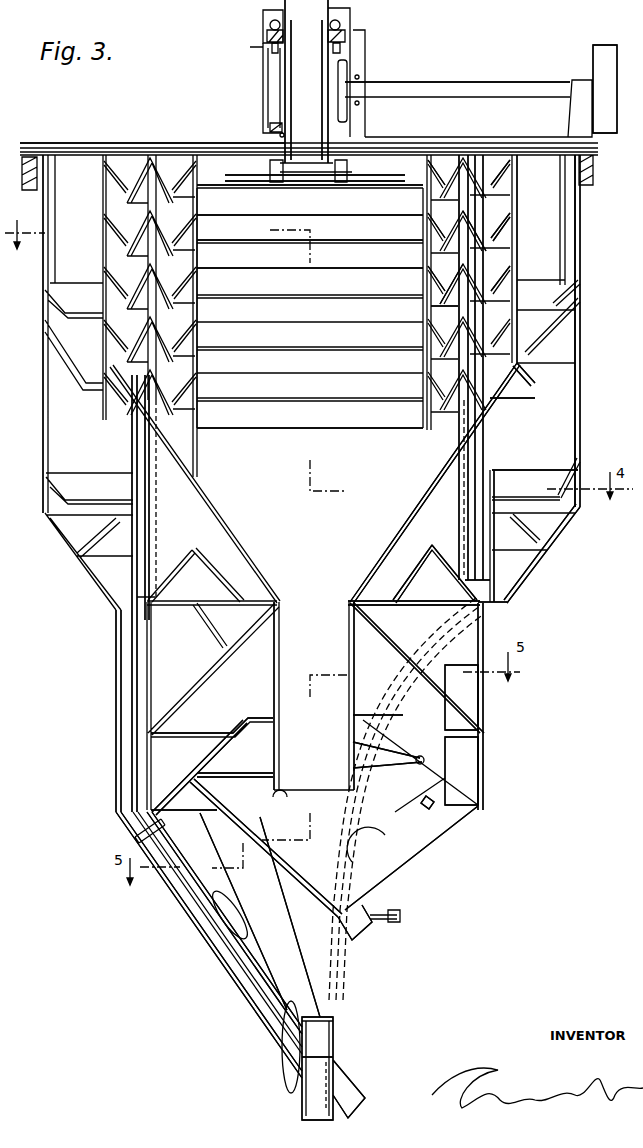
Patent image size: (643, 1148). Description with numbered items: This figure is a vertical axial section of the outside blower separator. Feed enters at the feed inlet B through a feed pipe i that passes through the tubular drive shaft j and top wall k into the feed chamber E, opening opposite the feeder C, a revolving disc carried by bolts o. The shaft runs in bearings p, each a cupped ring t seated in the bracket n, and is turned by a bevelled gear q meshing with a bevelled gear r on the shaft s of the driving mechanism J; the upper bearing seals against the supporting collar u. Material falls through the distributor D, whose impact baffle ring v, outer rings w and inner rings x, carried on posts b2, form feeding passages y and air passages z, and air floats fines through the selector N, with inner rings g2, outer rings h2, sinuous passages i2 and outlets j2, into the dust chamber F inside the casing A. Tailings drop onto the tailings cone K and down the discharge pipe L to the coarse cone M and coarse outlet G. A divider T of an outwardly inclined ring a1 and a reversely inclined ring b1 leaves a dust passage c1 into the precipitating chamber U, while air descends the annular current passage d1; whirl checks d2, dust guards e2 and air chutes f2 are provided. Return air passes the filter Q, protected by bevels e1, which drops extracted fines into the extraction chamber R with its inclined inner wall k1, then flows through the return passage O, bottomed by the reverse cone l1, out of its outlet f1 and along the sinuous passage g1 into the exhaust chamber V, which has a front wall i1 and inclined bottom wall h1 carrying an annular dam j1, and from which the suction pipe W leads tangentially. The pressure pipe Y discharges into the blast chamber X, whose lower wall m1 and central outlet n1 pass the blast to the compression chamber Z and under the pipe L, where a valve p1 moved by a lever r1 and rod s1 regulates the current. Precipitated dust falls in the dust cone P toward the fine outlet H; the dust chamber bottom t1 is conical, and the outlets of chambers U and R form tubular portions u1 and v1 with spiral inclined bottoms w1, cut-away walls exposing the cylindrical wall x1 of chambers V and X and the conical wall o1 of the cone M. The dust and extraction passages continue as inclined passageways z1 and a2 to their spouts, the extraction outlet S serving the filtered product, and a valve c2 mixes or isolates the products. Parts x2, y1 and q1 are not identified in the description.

The supporting collar u is at (262, 14).
The bearings p is at (269, 130).
The cupped ring t is at (346, 33).
The bracket n is at (366, 58).
The bevelled gear r is at (348, 81).
The driving mechanism J is at (457, 69).
The shaft s is at (512, 90).
The feed inlet B is at (306, 81).
The feed pipe i is at (306, 90).
The tubular drive shaft j is at (280, 92).
The bevelled gear q is at (278, 128).
The top wall k is at (220, 153).
The feeder C is at (358, 176).
The impact baffle ring v is at (430, 178).
The bolts o is at (361, 188).
The distributor D is at (400, 228).
The outer converging rings w is at (460, 220).
The inner retarding rings x is at (426, 258).
The feeding passages y is at (428, 291).
The air passages z is at (451, 284).
The selector N is at (501, 191).
The inner rings g2 is at (496, 223).
The outer rings h2 is at (517, 222).
The dust chamber F is at (546, 331).
The sinuous current passages i2 is at (505, 258).
The outlets j2 is at (494, 275).
The whirl checks d2 is at (581, 216).
The dust guards e2 is at (580, 296).
The annular current passage d1 is at (560, 340).
The main frame or casing A is at (321, 334).
The reversely inclined ring b1 is at (536, 380).
The dust passage c1 is at (521, 396).
The outwardly inclined ring a1 is at (512, 412).
The divider or dam T is at (546, 399).
The precipitating chamber U is at (535, 457).
The posts b2 is at (310, 447).
The feed chamber E is at (310, 327).
The air chutes f2 is at (579, 481).
The vertical tube x2 is at (490, 486).
The tailings cone K is at (412, 498).
The filter Q is at (459, 512).
The return passage O is at (412, 556).
The extraction chamber R is at (458, 563).
The guards or bevels e1 is at (526, 533).
The dust cone P is at (506, 536).
The bottom of dust chamber t1 is at (526, 581).
The reverse cone l1 is at (415, 581).
The outlet f1 is at (380, 600).
The annular dam j1 is at (428, 598).
The inclined inner wall k1 is at (470, 588).
The sinuous passage g1 is at (415, 605).
The exhaust chamber V is at (415, 668).
The inclined wall bottom w1 is at (506, 606).
The inclined bottom wall h1 is at (390, 645).
The cylindrical front wall i1 is at (479, 646).
The tubular portion u1 is at (116, 628).
The tubular portion v1 is at (132, 662).
The cylindrical outer wall x1 is at (116, 729).
The central outlet n1 is at (250, 718).
The valve p1 is at (273, 753).
The lower wall m1 is at (196, 766).
The discharge pipe L is at (314, 696).
The blast chamber X is at (388, 717).
The suction pipe W is at (479, 700).
The pressure pipe Y is at (479, 765).
The lever r1 is at (406, 784).
The rod s1 is at (436, 812).
The bottom partition y1 is at (483, 809).
The compression chamber Z is at (195, 799).
The spout and conical wall o1 is at (236, 831).
The fitting q1 is at (277, 806).
The coarse cone M is at (266, 848).
The coarse outlet G is at (357, 933).
The tubular passageway z1 is at (300, 1100).
The tubular passageway a2 is at (331, 1036).
The valve c2 is at (300, 1090).
The fine outlet H is at (300, 1118).
The extraction outlet S is at (355, 1093).